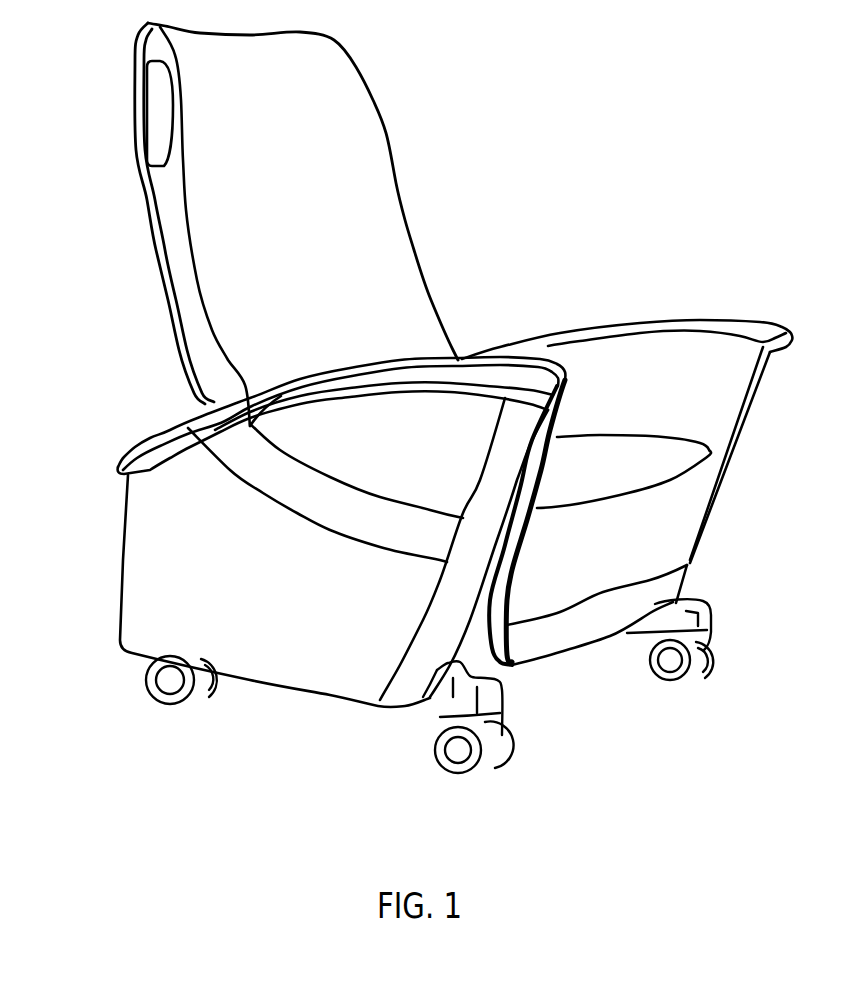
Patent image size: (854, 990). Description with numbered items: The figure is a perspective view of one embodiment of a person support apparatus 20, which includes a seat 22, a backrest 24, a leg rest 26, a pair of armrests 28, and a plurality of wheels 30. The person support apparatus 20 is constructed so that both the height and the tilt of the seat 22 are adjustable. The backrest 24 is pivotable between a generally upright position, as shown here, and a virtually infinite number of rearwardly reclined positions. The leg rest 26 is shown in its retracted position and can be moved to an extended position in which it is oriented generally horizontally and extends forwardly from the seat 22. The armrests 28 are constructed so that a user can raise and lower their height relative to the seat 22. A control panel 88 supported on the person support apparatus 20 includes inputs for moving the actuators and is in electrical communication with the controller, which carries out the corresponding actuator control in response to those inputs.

The person support apparatus 20 is at (403, 193).
The seat 22 is at (627, 452).
The backrest 24 is at (211, 210).
The leg rest 26 is at (580, 630).
The armrests 28 is at (153, 422).
The wheels 30 is at (158, 702).
The control panel 88 is at (155, 108).